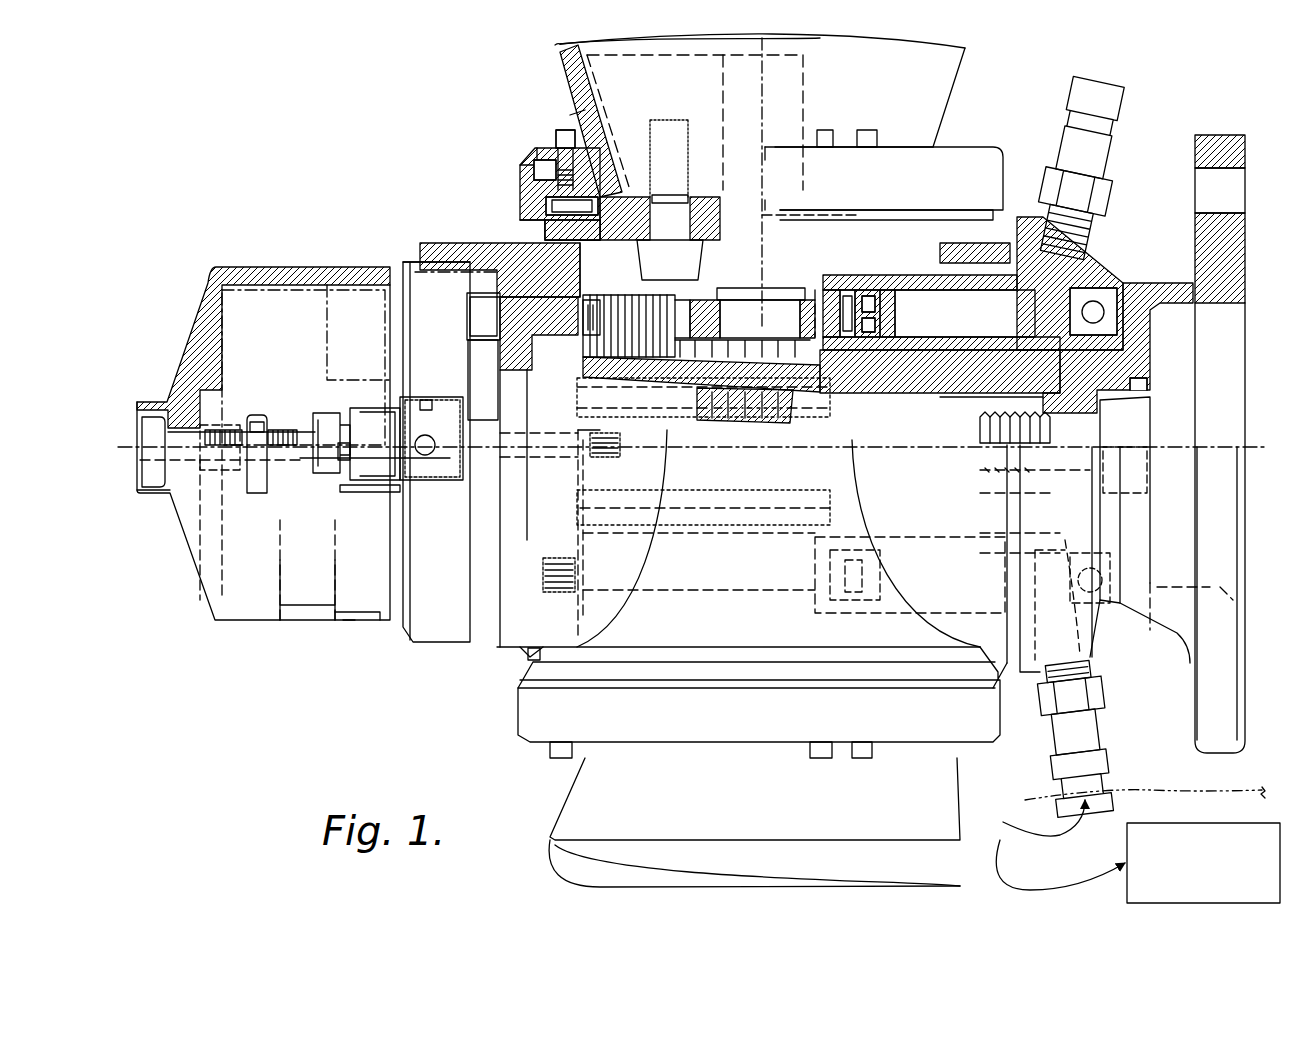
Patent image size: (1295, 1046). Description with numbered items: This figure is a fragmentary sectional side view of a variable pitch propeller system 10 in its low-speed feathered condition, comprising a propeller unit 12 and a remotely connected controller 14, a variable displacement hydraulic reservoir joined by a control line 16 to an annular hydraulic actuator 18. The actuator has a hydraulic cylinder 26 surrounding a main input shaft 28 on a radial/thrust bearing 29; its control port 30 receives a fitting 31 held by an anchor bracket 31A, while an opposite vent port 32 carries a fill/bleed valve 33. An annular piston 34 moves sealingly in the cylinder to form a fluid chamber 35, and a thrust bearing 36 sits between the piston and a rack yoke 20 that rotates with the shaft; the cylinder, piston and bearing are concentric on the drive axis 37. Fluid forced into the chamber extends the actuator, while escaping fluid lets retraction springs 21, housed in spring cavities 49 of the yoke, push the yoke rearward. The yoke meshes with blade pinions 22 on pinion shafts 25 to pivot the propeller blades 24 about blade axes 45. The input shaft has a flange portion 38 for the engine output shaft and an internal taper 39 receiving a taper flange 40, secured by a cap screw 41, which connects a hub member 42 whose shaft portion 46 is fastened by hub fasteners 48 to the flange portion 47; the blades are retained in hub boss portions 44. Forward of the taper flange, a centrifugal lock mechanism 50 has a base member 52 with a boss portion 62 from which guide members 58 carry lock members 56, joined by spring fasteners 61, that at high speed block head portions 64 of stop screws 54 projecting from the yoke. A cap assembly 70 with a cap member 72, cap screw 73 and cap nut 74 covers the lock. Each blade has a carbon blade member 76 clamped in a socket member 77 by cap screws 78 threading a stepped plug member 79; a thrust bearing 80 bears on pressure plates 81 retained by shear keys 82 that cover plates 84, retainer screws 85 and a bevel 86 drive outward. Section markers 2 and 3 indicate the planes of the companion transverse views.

The variable pitch propeller system 10 is at (610, 840).
The propeller unit 12 is at (450, 735).
The controller 14 is at (1212, 899).
The control line 16 is at (1060, 845).
The annular hydraulic actuator 18 is at (895, 265).
The rack yoke 20 is at (632, 297).
The retraction springs 21 is at (795, 405).
The blade pinions 22 is at (710, 300).
The propeller blades 24 is at (660, 82).
The pinion shafts 25 is at (800, 265).
The hydraulic cylinder 26 is at (1112, 257).
The main input shaft 28 is at (1152, 368).
The antifriction radial/thrust bearing 29 is at (1112, 318).
The control port 30 is at (1087, 668).
The fitting 31 is at (1095, 708).
The anchor bracket 31A is at (1170, 768).
The vent port 32 is at (1085, 230).
The fill/bleed valve 33 is at (1097, 185).
The annular piston 34 is at (895, 318).
The fluid chamber 35 is at (997, 322).
The antifriction thrust bearing 36 is at (847, 295).
The drive axis 37 is at (1183, 445).
The flange portion 38 is at (1218, 138).
The internal taper 39 is at (940, 392).
The taper flange 40 is at (575, 283).
The cap screw 41 is at (1150, 396).
The hub member 42 is at (528, 657).
The hub boss portions 44 is at (525, 150).
The blade axes 45 is at (752, 93).
The shaft portion 46 is at (430, 262).
The flange portion 47 is at (570, 330).
The hub fasteners 48 is at (468, 315).
The spring cavities 49 is at (698, 405).
The centrifugal lock mechanism 50 is at (340, 405).
The base member 52 is at (468, 350).
The stop screws 54 is at (345, 460).
The lock members 56 is at (400, 415).
The guide members 58 is at (440, 430).
The spring fasteners 61 is at (425, 435).
The boss portion 62 is at (385, 485).
The head portions 64 is at (318, 414).
The cap assembly 70 is at (212, 655).
The cap member 72 is at (213, 622).
The cap screw 73 is at (240, 425).
The cap nut 74 is at (262, 418).
The blade member 76 is at (558, 47).
The socket member 77 is at (590, 92).
The cap screws 78 is at (684, 276).
The stepped plug member 79 is at (580, 108).
The anti-friction thrust bearing 80 is at (540, 223).
The pressure plates 81 is at (545, 197).
The shear keys 82 is at (537, 192).
The cover plates 84 is at (593, 165).
The retainer screws 85 is at (556, 132).
The bevel 86 is at (535, 178).
The section line 2- 2 is at (435, 262).
The section line 3- 3 is at (118, 447).